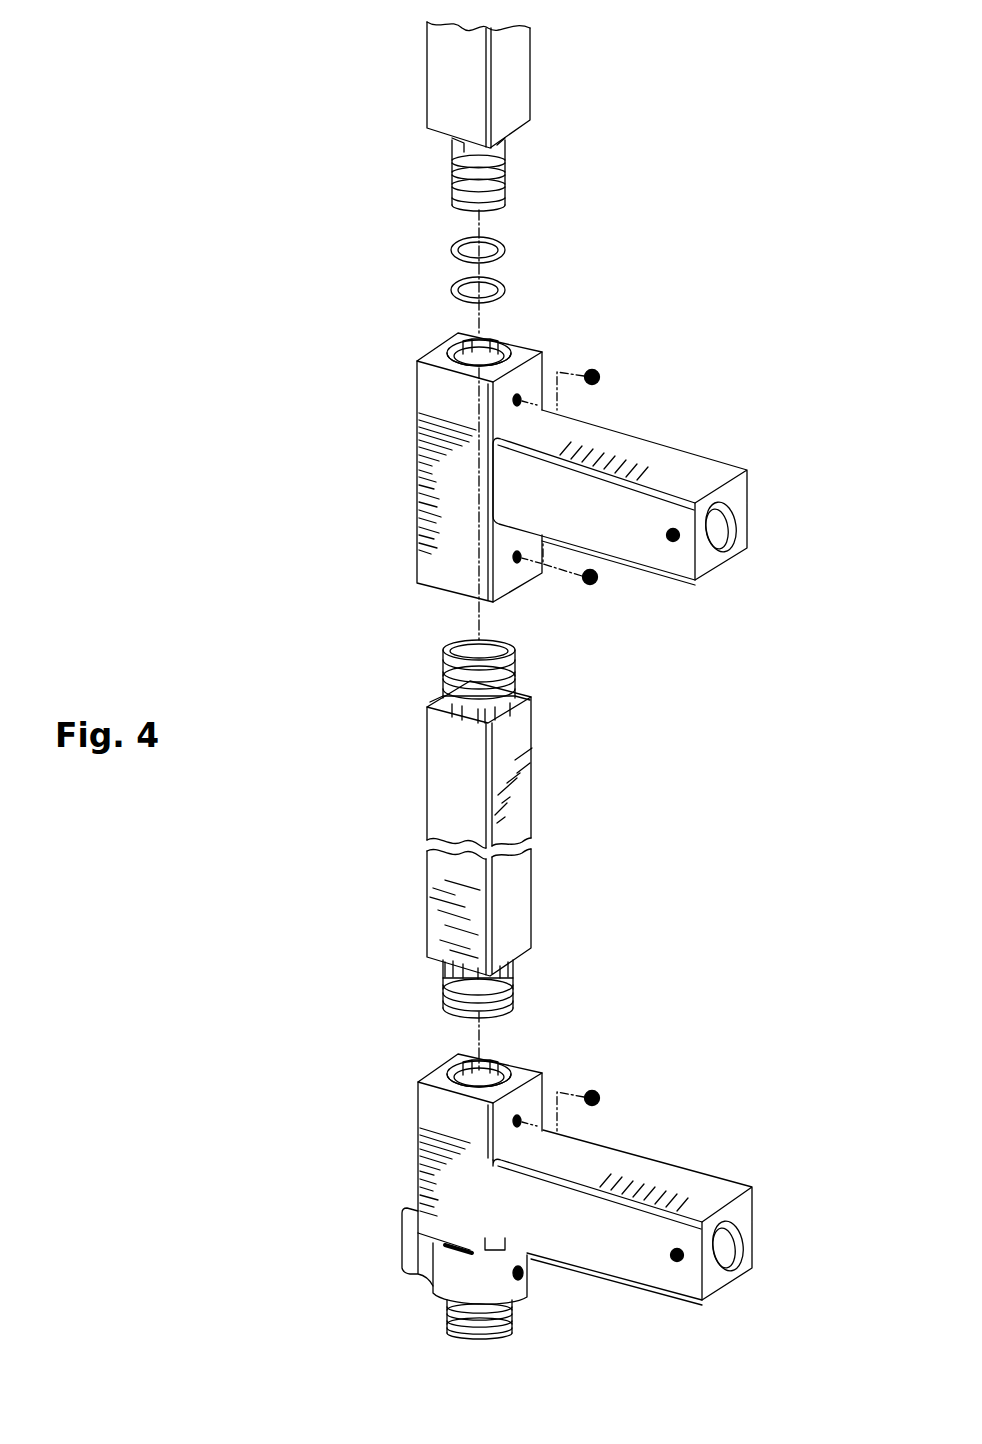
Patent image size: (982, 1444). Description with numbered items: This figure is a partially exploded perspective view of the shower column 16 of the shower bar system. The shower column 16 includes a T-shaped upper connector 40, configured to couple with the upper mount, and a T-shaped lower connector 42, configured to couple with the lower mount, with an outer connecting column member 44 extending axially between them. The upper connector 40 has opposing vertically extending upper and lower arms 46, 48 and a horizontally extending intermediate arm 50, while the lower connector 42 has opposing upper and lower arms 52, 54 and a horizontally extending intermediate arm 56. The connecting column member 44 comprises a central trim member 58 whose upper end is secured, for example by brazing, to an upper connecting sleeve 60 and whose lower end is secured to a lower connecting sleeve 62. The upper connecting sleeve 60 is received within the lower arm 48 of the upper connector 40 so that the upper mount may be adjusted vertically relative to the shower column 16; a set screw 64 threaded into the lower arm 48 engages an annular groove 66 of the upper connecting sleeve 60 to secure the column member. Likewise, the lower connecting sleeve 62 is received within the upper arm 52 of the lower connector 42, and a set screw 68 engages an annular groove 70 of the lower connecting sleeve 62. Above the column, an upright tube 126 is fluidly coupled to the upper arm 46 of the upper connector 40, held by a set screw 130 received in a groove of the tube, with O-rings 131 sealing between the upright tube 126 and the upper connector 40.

The shower column 16 is at (392, 828).
The upright tube 126 is at (441, 75).
The O-rings 131 is at (452, 292).
The upper connector 40 is at (425, 385).
The upper arm 46 is at (543, 364).
The lower arm 48 is at (508, 578).
The intermediate arm 50 is at (707, 472).
The set screw 130 is at (600, 377).
The set screw 64 is at (600, 580).
The annular groove 66 is at (443, 682).
The upper connecting sleeve 60 is at (522, 694).
The central trim member 58 is at (522, 805).
The connecting column member 44 is at (522, 905).
The lower connecting sleeve 62 is at (445, 968).
The annular groove 70 is at (445, 995).
The lower connector 42 is at (428, 1108).
The upper arm 52 is at (535, 1092).
The set screw 68 is at (602, 1098).
The intermediate arm 56 is at (706, 1190).
The lower arm 54 is at (482, 1233).